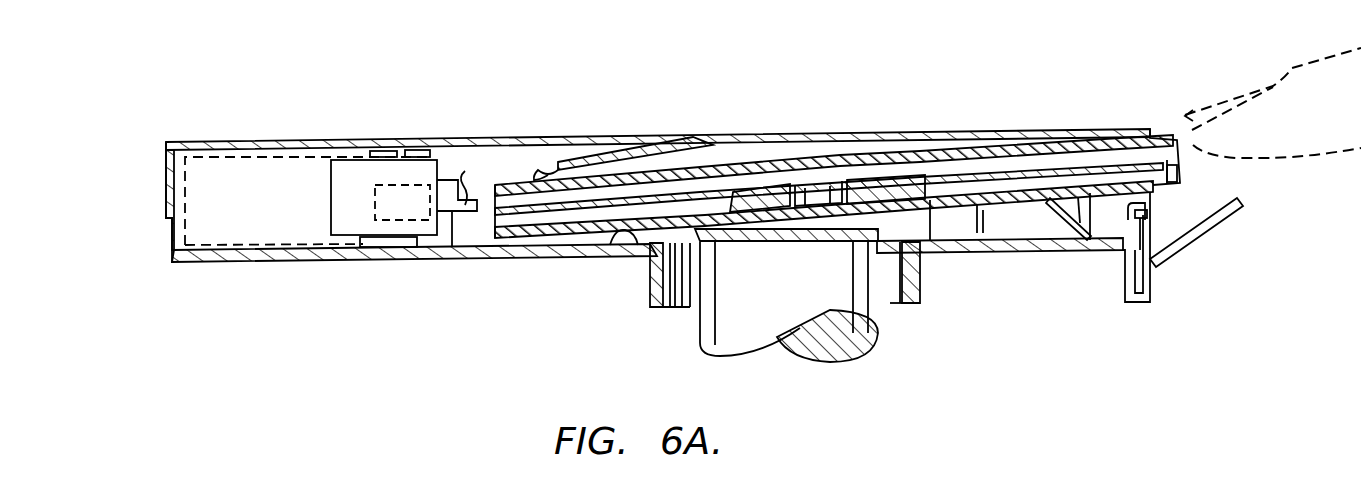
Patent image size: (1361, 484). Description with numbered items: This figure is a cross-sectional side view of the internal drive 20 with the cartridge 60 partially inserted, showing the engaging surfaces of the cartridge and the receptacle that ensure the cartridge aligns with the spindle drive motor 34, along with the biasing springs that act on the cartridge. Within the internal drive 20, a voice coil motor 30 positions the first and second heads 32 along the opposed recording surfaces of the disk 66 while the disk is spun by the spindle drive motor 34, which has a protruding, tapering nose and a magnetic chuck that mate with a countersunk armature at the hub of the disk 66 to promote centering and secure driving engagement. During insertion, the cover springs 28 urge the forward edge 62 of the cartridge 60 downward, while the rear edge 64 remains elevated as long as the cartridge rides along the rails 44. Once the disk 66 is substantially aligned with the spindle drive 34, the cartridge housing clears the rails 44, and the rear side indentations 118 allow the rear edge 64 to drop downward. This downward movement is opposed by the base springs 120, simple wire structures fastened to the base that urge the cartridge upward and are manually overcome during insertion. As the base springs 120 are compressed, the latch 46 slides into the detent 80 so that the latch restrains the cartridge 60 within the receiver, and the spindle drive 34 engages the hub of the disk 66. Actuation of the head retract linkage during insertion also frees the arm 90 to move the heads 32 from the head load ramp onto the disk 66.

The internal drive 20 is at (410, 110).
The cover springs 28 is at (598, 158).
The voice coil motor 30 is at (168, 172).
The heads 32 is at (468, 200).
The spindle drive motor 34 is at (840, 242).
The rails 44 is at (1015, 223).
The latch 46 is at (1145, 220).
The cartridge 60 is at (836, 152).
The forward edge 62 is at (490, 225).
The rear edge 64 is at (1192, 152).
The disk 66 is at (1075, 168).
The detent 80 is at (1180, 170).
The arm 90 is at (450, 250).
The rear side indentations 118 is at (948, 167).
The base springs 120 is at (1067, 223).